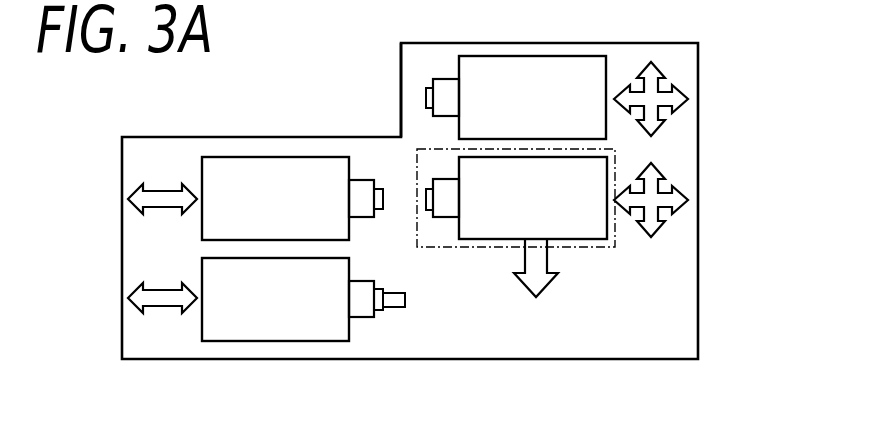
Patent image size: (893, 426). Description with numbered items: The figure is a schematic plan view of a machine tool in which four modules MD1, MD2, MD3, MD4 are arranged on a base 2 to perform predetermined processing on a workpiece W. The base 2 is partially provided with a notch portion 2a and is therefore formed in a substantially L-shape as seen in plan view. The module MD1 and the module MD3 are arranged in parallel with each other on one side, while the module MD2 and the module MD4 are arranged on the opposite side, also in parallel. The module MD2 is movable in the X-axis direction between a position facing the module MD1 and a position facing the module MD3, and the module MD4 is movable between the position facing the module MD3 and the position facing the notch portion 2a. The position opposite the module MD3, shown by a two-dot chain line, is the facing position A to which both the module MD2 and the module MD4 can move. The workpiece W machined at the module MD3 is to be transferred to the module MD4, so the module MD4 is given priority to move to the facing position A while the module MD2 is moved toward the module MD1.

The base 2 is at (700, 68).
The notch portion 2a is at (401, 82).
The facing position A is at (600, 248).
The workpiece W is at (393, 301).
The module MD1 is at (295, 312).
The module MD2 is at (510, 212).
The module MD3 is at (295, 212).
The module MD4 is at (511, 111).